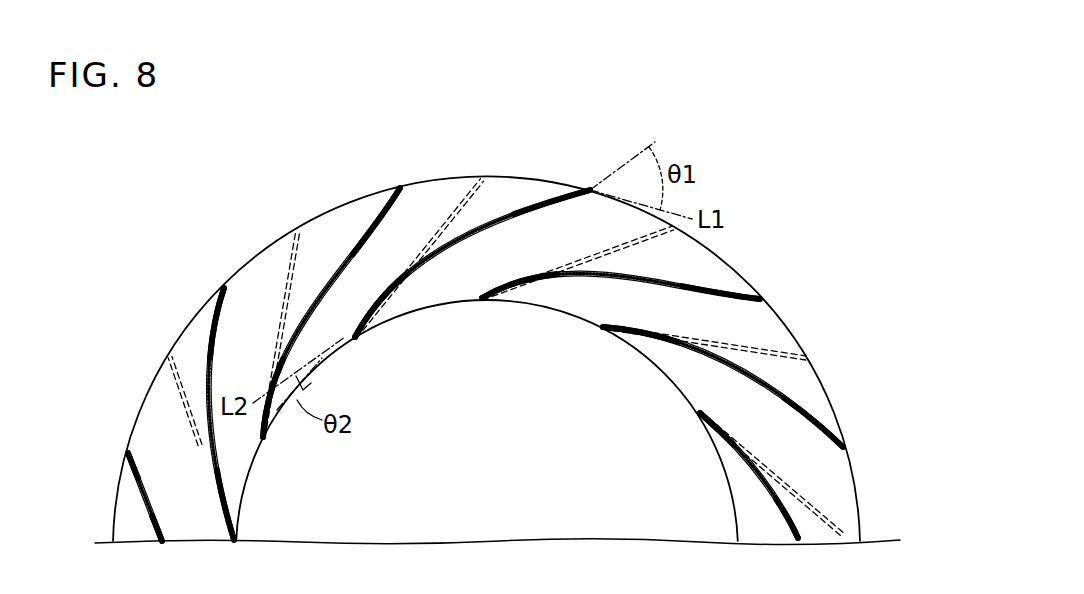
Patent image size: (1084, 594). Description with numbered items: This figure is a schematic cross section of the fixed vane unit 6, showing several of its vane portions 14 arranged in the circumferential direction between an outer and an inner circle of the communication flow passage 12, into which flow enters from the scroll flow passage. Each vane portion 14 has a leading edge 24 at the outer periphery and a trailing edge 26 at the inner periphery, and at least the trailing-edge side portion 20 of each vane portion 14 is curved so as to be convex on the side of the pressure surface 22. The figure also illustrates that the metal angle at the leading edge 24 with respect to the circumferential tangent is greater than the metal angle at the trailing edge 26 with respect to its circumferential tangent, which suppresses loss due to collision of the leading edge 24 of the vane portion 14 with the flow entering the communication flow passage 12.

The fixed vane unit 6 is at (717, 90).
The communication flow passage 12 is at (846, 493).
The vane portion 14 is at (215, 316).
The trailing-edge side portion 20 is at (275, 412).
The pressure surface 22 is at (200, 417).
The leading edge 24 is at (222, 294).
The trailing edge 26 is at (265, 442).